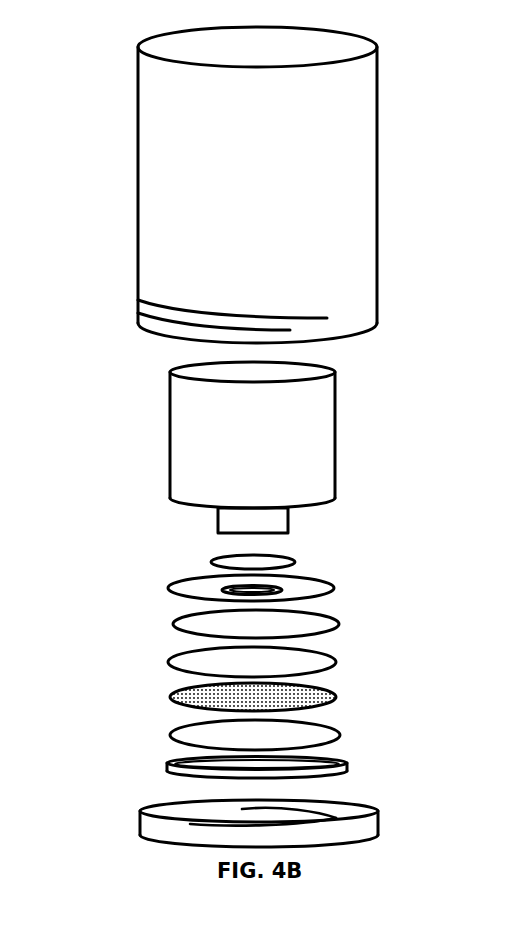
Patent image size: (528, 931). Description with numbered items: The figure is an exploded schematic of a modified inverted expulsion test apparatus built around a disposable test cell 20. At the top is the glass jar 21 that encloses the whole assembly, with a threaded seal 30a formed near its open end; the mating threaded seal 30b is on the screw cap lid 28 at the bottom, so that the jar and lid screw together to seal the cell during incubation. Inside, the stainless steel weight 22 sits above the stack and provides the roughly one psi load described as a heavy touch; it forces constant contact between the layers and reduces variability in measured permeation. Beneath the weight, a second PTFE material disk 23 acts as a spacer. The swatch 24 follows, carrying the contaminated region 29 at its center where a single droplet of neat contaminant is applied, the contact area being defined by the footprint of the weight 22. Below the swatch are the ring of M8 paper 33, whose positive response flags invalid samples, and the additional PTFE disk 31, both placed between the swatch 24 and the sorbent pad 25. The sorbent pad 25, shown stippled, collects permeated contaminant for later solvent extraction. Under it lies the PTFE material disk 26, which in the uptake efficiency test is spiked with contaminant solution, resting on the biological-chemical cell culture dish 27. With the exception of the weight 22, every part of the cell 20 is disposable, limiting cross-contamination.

The test cell 20 is at (106, 478).
The glass jar 21 is at (350, 205).
The stainless steel weight 22 is at (305, 398).
The second PTFE material disk 23 is at (294, 558).
The swatch 24 is at (331, 585).
The sorbent pad 25 is at (334, 694).
The PTFE material disk 26 is at (318, 737).
The biological-chemical cell culture dish 27 is at (346, 762).
The screw cap lid 28 is at (368, 828).
The contaminated region 29 is at (227, 590).
The threaded seal 30a is at (174, 302).
The threaded seal 30b is at (240, 811).
The PTFE disk 31 is at (333, 659).
The ring of M8 paper 33 is at (336, 621).